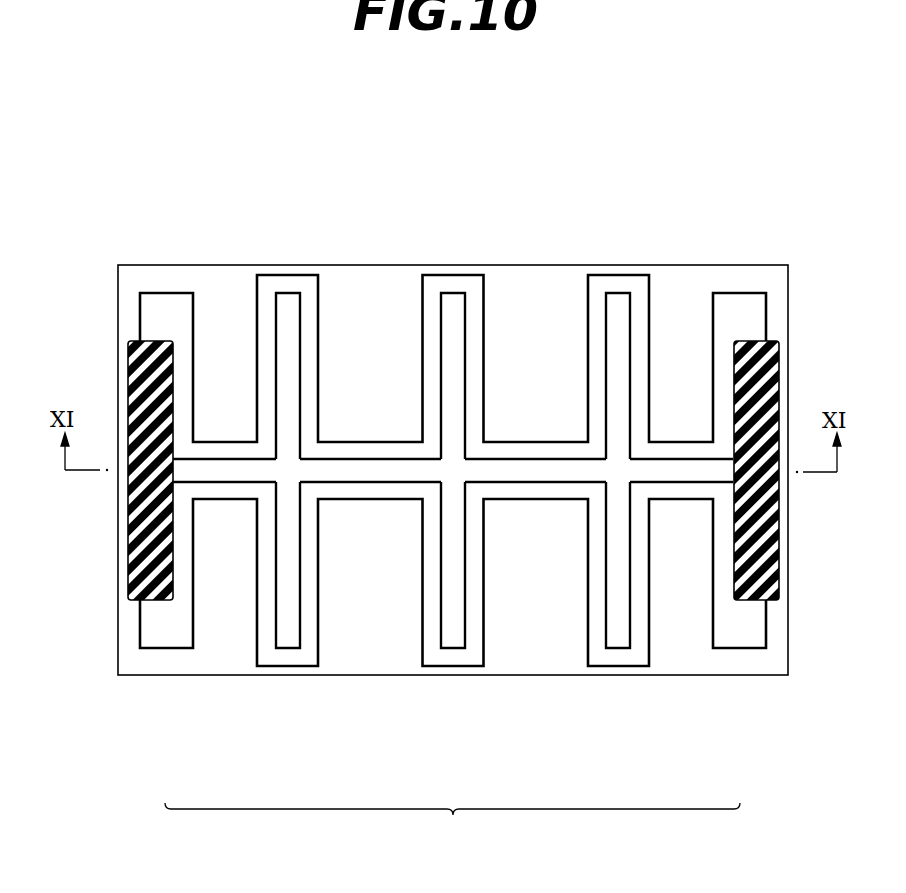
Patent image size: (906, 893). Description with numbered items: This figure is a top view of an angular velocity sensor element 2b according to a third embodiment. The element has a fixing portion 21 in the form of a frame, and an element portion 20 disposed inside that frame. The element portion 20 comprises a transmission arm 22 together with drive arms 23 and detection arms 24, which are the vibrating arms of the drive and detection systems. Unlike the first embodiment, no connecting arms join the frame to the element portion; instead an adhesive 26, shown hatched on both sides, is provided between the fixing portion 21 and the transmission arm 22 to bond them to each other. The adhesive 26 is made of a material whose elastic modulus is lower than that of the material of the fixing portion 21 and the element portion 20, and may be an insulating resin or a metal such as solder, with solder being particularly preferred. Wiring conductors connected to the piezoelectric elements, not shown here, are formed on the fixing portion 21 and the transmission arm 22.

The angular velocity sensor element 2b is at (682, 178).
The element portion 20 is at (452, 826).
The fixing portion 21 is at (738, 282).
The transmission arm 22 is at (188, 472).
The drive arm 23 is at (285, 300).
The detection arm 24 is at (450, 300).
The adhesive 26 is at (145, 390).